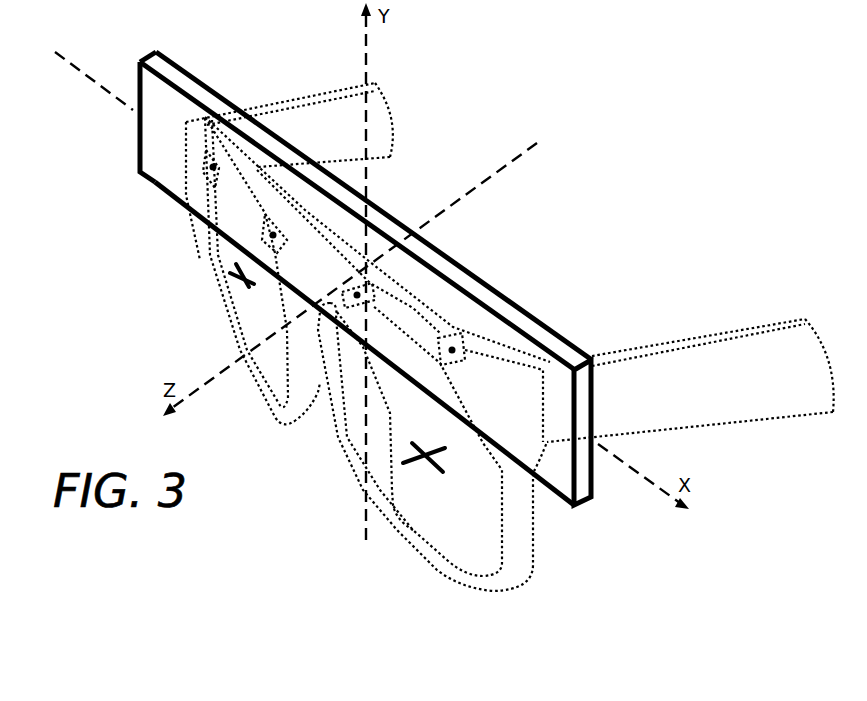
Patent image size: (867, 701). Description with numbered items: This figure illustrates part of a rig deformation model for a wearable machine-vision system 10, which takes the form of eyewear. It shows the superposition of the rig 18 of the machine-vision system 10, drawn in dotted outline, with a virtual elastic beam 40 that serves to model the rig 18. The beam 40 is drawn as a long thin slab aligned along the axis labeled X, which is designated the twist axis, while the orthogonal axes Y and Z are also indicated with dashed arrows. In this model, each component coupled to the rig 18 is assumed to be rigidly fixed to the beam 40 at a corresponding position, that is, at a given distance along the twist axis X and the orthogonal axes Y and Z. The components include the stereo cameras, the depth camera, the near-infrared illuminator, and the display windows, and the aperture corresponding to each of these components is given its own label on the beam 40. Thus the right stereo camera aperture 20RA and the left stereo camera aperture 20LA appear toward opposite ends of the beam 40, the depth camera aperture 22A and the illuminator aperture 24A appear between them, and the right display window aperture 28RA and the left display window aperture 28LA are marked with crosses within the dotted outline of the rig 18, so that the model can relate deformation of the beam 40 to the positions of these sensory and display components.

The machine-vision system 10 is at (650, 347).
The rig 18 is at (527, 423).
The virtual elastic beam 40 is at (177, 80).
The right stereo camera aperture 20RA is at (213, 167).
The depth camera aperture 22A is at (273, 235).
The illuminator aperture 24A is at (357, 294).
The left stereo camera aperture 20LA is at (452, 350).
The right display window aperture 28RA is at (242, 276).
The left display window aperture 28LA is at (427, 460).